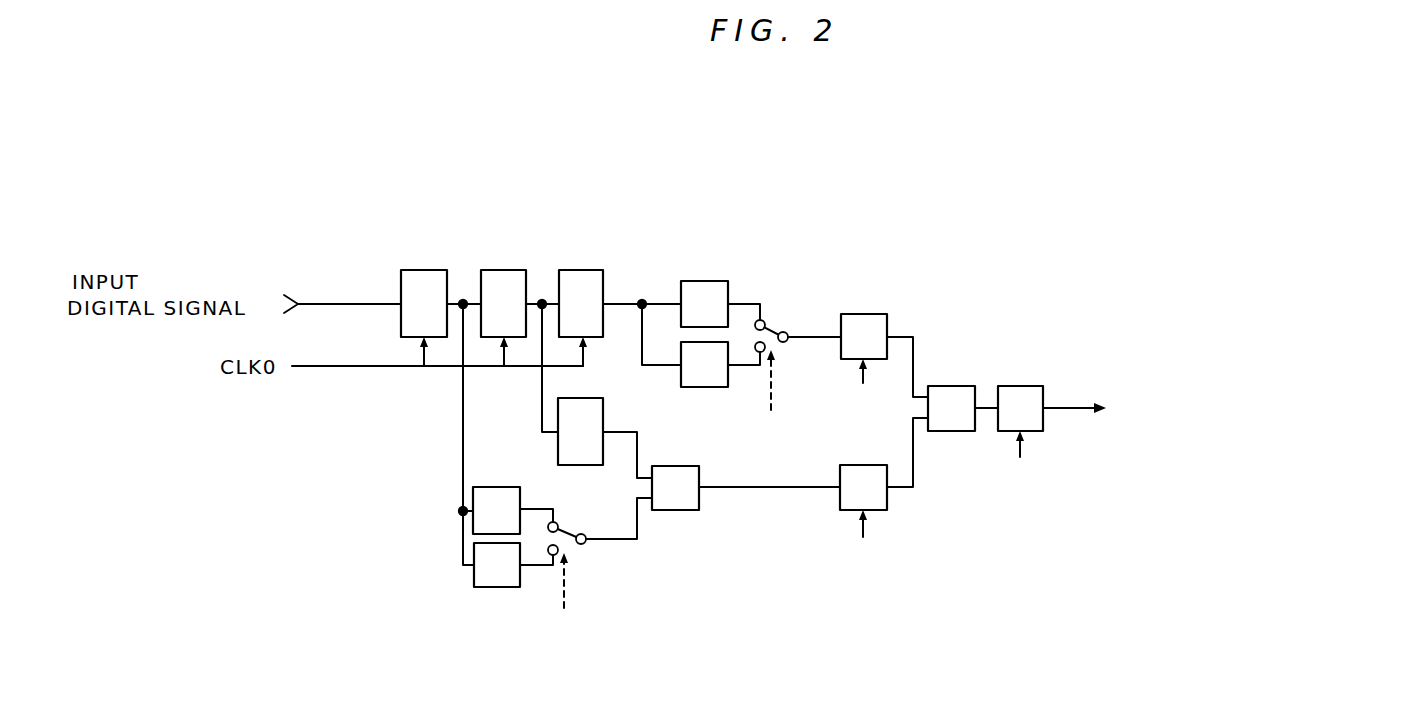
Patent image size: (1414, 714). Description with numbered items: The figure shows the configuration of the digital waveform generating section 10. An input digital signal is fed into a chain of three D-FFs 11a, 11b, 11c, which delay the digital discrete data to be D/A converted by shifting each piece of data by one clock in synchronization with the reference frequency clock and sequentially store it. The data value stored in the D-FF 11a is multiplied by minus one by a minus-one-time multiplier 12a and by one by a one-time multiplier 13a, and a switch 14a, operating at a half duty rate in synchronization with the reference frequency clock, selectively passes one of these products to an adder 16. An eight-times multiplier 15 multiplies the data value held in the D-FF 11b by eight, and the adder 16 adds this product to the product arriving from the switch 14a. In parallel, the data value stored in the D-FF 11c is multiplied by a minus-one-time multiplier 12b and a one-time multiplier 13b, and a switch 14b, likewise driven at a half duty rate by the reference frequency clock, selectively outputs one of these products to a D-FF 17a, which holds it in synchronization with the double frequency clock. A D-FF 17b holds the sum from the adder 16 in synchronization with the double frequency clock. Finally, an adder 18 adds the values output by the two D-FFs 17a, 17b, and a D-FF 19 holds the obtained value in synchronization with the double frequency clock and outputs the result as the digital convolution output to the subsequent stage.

The digital waveform generating section 10 is at (665, 181).
The D-FF 11a is at (424, 270).
The D-FF 11b is at (505, 270).
The D-FF 11c is at (583, 270).
The −1-time multiplier 12a is at (497, 487).
The −1-time multiplier 12b is at (681, 374).
The 1-time multiplier 13a is at (497, 587).
The 1-time multiplier 13b is at (706, 281).
The switch 14a is at (588, 548).
The switch 14b is at (770, 322).
The 8-times multiplier 15 is at (582, 465).
The adder 16 is at (336, 313).
The D-FF 17a is at (862, 314).
The D-FF 17b is at (866, 465).
The adder 18 is at (950, 386).
The D-FF 19 is at (1018, 386).